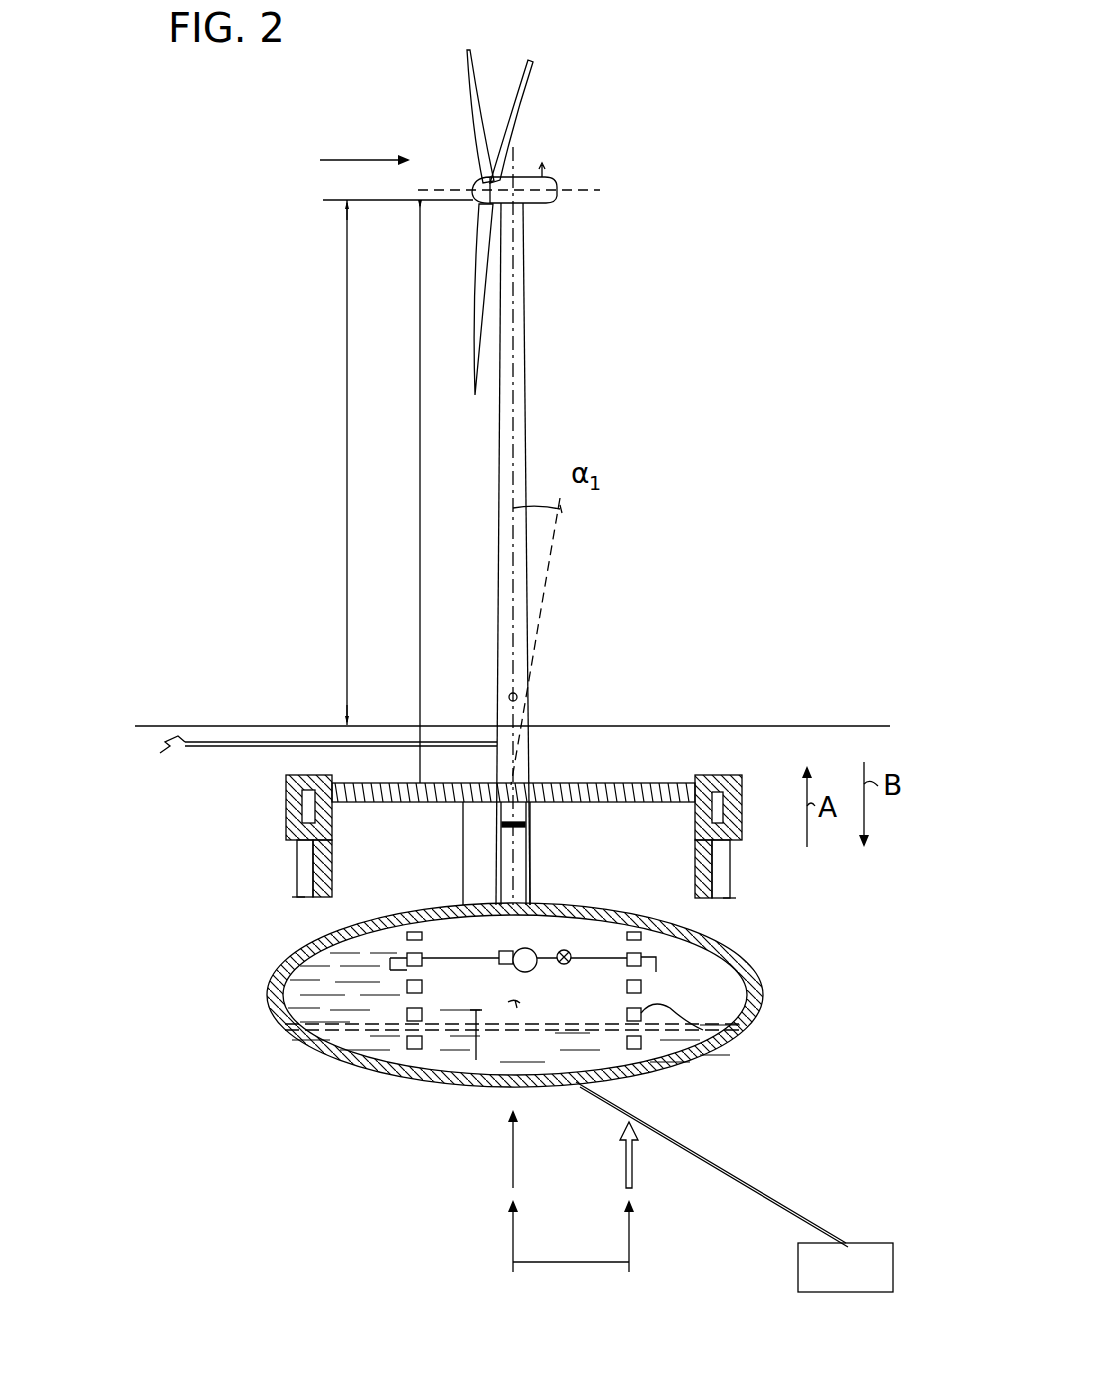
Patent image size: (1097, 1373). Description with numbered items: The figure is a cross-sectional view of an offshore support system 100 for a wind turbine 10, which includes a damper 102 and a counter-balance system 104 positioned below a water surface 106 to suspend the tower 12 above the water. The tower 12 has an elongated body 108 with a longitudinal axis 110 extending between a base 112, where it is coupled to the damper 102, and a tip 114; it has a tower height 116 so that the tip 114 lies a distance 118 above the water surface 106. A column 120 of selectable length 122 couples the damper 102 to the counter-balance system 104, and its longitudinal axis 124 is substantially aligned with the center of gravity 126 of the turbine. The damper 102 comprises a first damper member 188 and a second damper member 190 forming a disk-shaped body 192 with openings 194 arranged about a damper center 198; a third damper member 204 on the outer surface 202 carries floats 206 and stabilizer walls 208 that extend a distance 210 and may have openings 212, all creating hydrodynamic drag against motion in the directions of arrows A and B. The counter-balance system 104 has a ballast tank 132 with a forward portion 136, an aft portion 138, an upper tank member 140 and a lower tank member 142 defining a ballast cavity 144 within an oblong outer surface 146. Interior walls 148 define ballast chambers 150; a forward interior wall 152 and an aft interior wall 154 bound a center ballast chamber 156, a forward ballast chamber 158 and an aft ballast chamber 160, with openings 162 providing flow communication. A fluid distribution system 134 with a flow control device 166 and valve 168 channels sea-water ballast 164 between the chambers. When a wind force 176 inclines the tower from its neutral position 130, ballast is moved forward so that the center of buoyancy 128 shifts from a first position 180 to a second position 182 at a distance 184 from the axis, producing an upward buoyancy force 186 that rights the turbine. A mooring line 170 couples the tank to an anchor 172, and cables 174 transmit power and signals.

The wind turbine 10 is at (633, 143).
The tower 12 is at (580, 440).
The offshore support system 100 is at (228, 1017).
The damper 102 is at (250, 800).
The counter-balance system 104 is at (870, 940).
The water surface 106 is at (745, 725).
The elongated body 108 is at (528, 580).
The longitudinal axis 110 is at (515, 392).
The base 112 is at (543, 768).
The tip 114 is at (548, 215).
The tower height 116 is at (420, 430).
The distance 118 is at (347, 300).
The column 120 is at (530, 858).
The length 122 is at (463, 829).
The longitudinal axis 124 is at (518, 880).
The center of gravity 126 is at (508, 697).
The center of buoyancy 128 is at (513, 1150).
The neutral position 130 is at (565, 503).
The ballast tank 132 is at (722, 1063).
The fluid distribution system 134 is at (565, 945).
The forward portion 136 is at (333, 1068).
The aft portion 138 is at (752, 947).
The upper tank member 140 is at (418, 908).
The lower tank member 142 is at (450, 1092).
The ballast cavity 144 is at (515, 1005).
The outer surface 146 is at (762, 997).
The interior walls 148 is at (746, 1034).
The ballast chambers 150 is at (335, 977).
The forward interior wall 152 is at (433, 905).
The aft interior wall 154 is at (645, 988).
The center ballast chamber 156 is at (476, 1060).
The forward ballast chamber 158 is at (335, 1007).
The aft ballast chamber 160 is at (762, 1006).
The openings 162 is at (405, 938).
The ballast 164 is at (524, 1046).
The flow control device 166 is at (530, 950).
The valve 168 is at (567, 963).
The mooring line 170 is at (752, 1182).
The anchor 172 is at (860, 1243).
The cables 174 is at (245, 735).
The wind force 176 is at (355, 160).
The first position 180 is at (513, 1232).
The second position 182 is at (629, 1232).
The distance 184 is at (550, 1263).
The upward buoyancy force 186 is at (632, 1168).
The first damper member 188 is at (386, 783).
The second damper member 190 is at (621, 783).
The disk-shaped body 192 is at (770, 750).
The openings 194 is at (372, 803).
The damper center 198 is at (527, 810).
The outer surface 202 is at (305, 762).
The third damper member 204 is at (286, 790).
The floats 206 is at (286, 838).
The stabilizer walls 208 is at (332, 882).
The distance 210 is at (298, 865).
The openings 212 is at (332, 860).